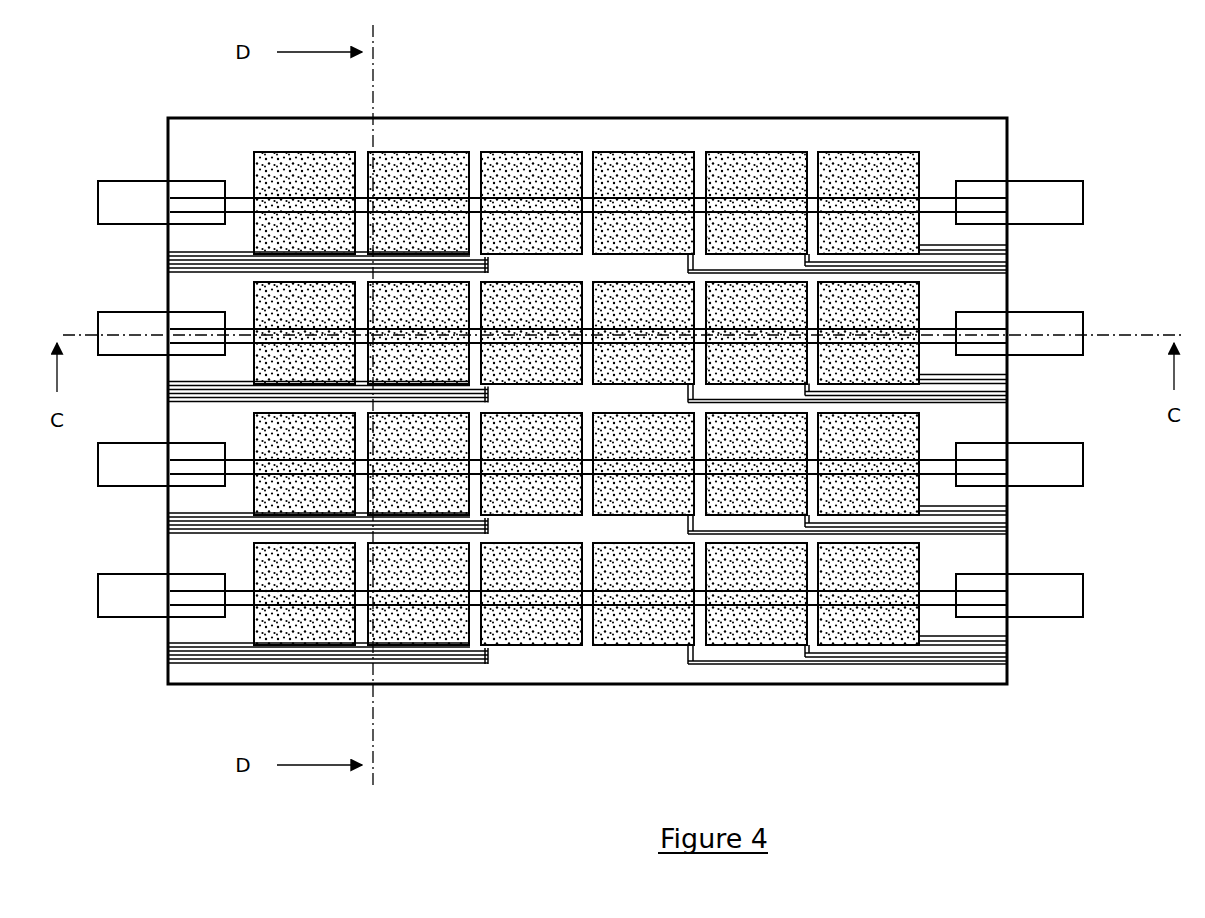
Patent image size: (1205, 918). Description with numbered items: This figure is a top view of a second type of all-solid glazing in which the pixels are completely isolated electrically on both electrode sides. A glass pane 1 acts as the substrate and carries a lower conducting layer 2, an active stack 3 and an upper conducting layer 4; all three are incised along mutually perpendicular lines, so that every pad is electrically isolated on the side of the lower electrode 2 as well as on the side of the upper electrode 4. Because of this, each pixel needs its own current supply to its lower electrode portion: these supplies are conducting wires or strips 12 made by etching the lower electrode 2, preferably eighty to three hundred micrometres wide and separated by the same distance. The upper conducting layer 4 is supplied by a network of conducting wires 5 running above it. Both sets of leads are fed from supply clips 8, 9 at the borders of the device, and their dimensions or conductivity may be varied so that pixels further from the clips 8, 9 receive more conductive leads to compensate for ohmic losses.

The glass pane 1 is at (473, 158).
The lower conducting layer 2 is at (756, 160).
The active stack 3 is at (758, 167).
The upper conducting layer 4 is at (852, 160).
The conducting wires 5 is at (938, 196).
The clip 8 is at (1053, 186).
The clip 9 is at (108, 181).
The conducting wires or strips 12 is at (948, 273).